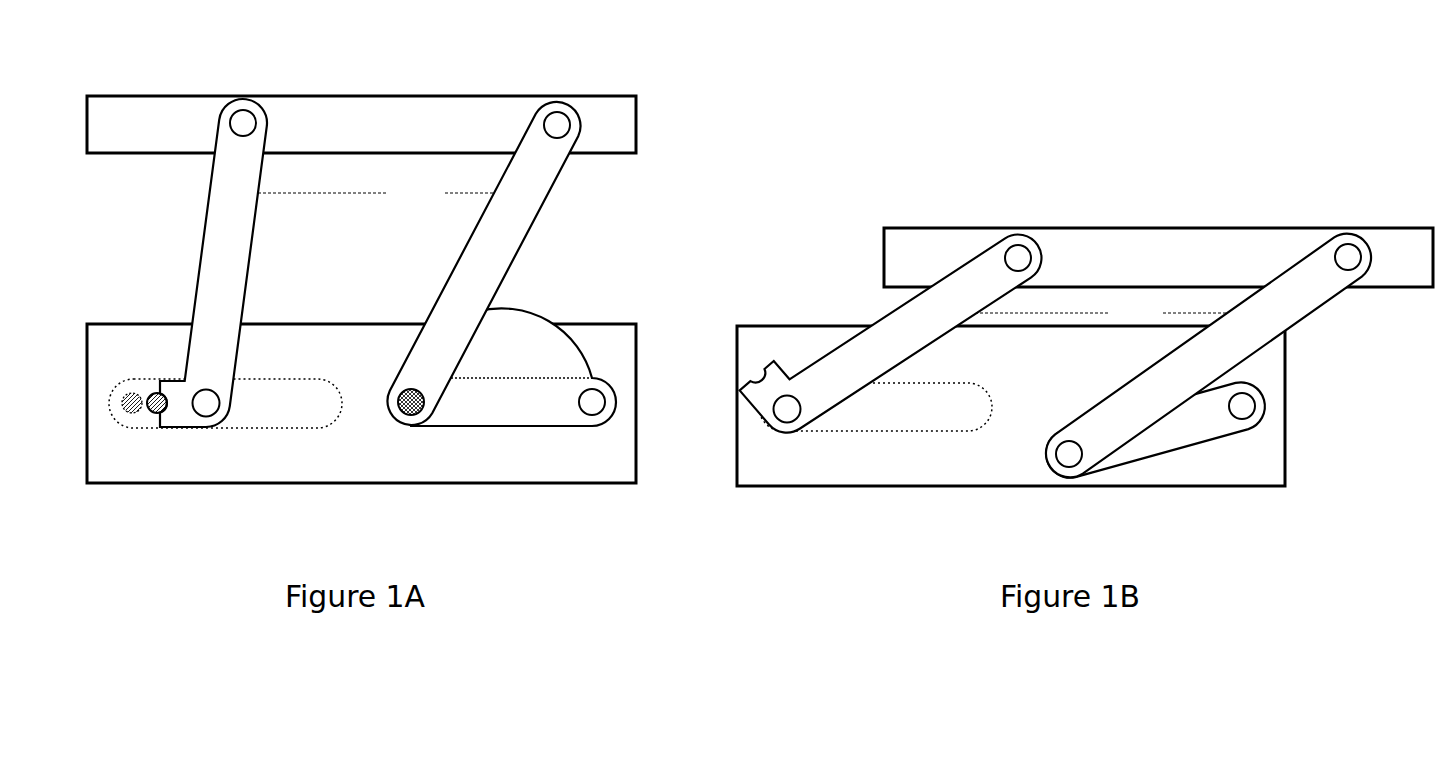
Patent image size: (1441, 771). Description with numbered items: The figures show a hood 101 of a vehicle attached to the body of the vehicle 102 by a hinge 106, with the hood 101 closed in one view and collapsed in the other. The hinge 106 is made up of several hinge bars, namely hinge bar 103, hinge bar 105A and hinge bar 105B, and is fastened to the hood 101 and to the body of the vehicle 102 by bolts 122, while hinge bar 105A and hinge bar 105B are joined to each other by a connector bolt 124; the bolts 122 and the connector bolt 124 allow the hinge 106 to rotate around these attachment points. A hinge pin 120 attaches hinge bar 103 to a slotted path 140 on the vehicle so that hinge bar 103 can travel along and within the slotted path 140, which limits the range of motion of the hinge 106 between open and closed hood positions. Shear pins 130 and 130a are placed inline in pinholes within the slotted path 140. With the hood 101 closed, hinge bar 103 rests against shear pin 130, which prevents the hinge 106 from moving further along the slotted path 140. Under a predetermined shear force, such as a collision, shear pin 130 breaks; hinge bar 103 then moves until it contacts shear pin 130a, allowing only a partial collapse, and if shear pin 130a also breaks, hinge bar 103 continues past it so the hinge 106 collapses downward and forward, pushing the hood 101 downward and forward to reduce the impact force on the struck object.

In FIG. 1A, the hood 101 is at (637, 112).
In FIG. 1B, the hood 101 is at (1145, 228).
In FIG. 1A, the body of the vehicle 102 is at (313, 485).
In FIG. 1B, the body of the vehicle 102 is at (788, 488).
In FIG. 1A, the hinge bar 103 is at (252, 262).
In FIG. 1B, the hinge bar 103 is at (907, 303).
In FIG. 1A, the hinge bar 105A is at (517, 257).
In FIG. 1B, the hinge bar 105A is at (1302, 322).
In FIG. 1A, the hinge bar 105B is at (533, 427).
In FIG. 1B, the hinge bar 105B is at (1182, 448).
In FIG. 1A, the hinge 106 is at (376, 193).
In FIG. 1B, the hinge 106 is at (1101, 313).
In FIG. 1A, the hinge pin 120 is at (206, 417).
In FIG. 1B, the hinge pin 120 is at (787, 423).
In FIG. 1A, the bolt 122 is at (245, 130).
In FIG. 1B, the bolt 122 is at (1031, 258).
In FIG. 1A, the connector bolt 124 is at (411, 416).
In FIG. 1B, the connector bolt 124 is at (1069, 468).
In FIG. 1A, the shear pin 130 is at (155, 413).
In FIG. 1A, the shear pin 130a is at (125, 413).
In FIG. 1A, the slotted path 140 is at (272, 380).
In FIG. 1B, the slotted path 140 is at (951, 383).